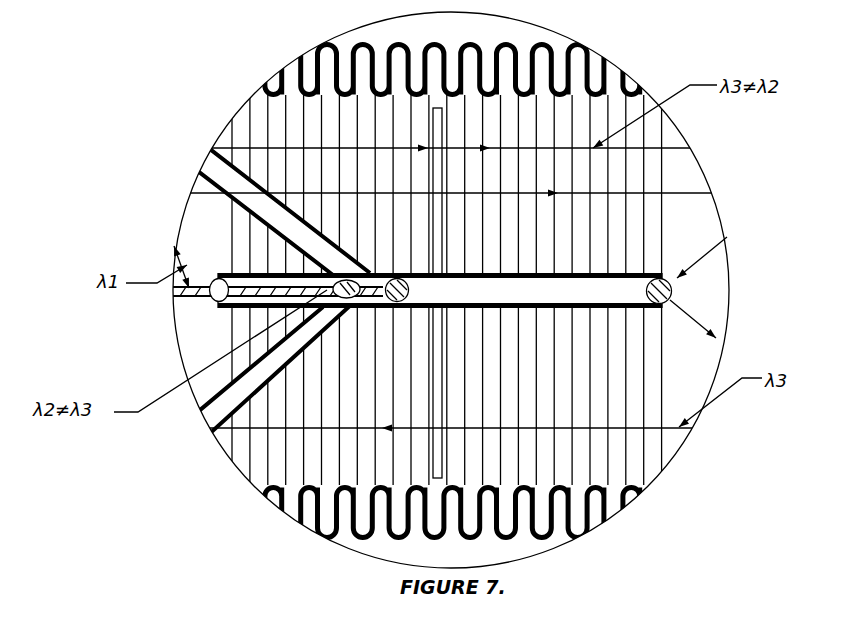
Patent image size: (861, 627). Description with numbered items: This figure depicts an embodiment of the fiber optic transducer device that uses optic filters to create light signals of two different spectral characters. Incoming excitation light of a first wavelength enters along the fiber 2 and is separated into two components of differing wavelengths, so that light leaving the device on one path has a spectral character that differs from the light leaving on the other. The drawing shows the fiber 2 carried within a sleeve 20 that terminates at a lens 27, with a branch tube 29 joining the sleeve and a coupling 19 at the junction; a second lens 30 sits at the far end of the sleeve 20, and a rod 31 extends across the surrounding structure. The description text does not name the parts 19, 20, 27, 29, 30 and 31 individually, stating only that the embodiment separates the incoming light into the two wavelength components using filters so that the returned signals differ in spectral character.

The optical fiber 2 is at (219, 276).
The fiber end coupling 19 is at (310, 298).
The fiber sleeve tube 20 is at (346, 263).
The lens 27 is at (412, 280).
The branch tube 29 is at (215, 272).
The output lens 30 is at (647, 296).
The reflector rod 31 is at (434, 117).